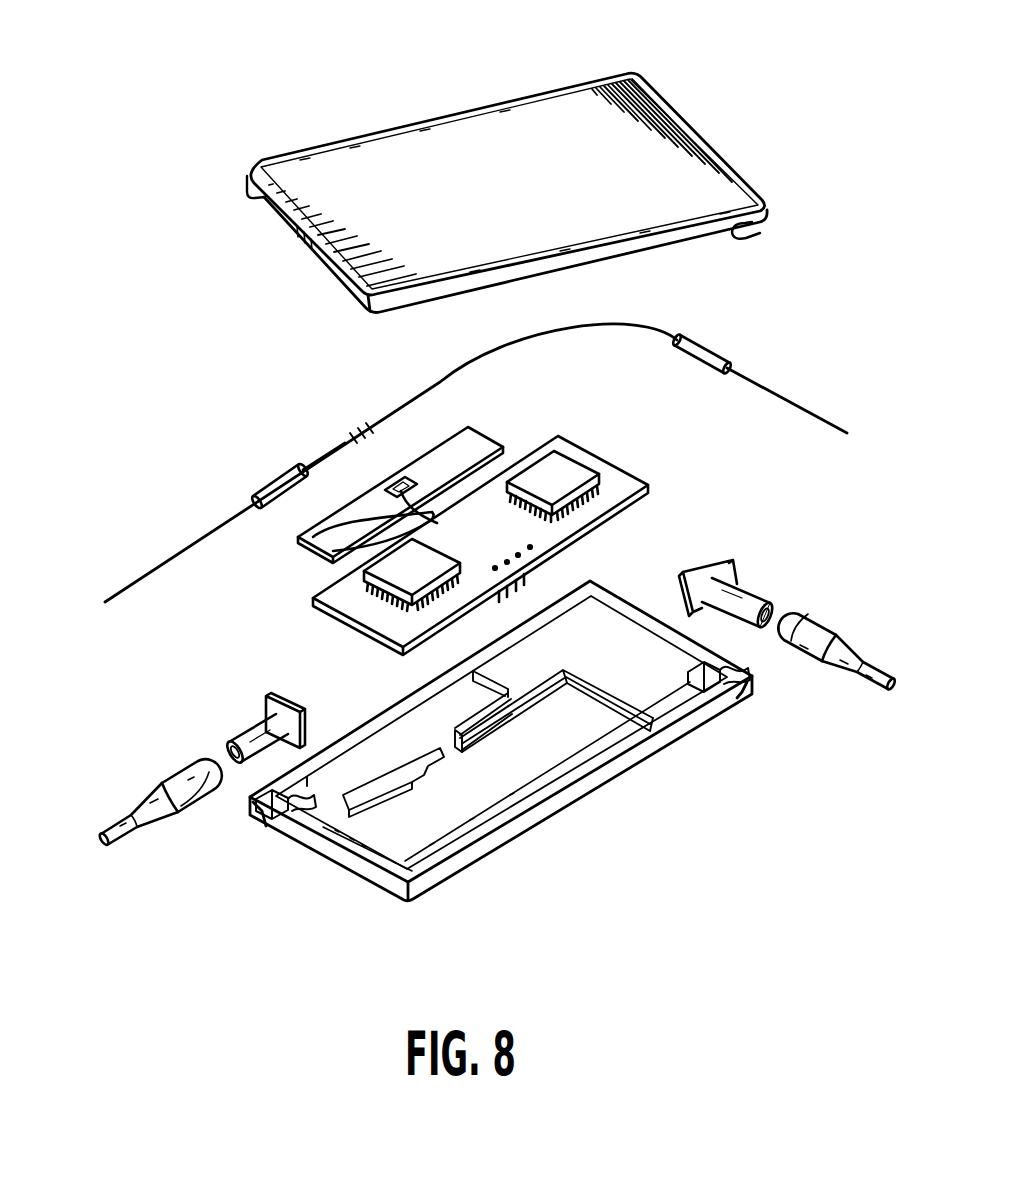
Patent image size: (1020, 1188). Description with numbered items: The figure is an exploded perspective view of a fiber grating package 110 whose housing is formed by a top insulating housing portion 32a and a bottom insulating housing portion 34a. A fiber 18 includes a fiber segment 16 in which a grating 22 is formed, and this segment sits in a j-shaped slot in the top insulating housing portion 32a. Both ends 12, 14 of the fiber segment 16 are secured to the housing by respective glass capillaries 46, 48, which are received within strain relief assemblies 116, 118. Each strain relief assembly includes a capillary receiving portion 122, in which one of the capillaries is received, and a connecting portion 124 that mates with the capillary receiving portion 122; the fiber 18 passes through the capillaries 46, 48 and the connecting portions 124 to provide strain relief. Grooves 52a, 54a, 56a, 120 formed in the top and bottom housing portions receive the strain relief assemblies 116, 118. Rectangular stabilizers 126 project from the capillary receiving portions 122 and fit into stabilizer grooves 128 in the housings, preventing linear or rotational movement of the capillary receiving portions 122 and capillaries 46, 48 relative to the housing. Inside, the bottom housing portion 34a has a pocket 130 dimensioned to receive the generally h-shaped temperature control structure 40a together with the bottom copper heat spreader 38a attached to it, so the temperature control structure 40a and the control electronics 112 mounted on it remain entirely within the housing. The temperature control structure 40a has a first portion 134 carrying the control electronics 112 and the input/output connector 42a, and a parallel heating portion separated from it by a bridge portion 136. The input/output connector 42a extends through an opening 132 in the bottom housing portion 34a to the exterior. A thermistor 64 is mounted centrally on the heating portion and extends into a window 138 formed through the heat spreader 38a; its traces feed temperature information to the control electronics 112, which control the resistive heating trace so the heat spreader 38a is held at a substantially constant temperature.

The grating package 110 is at (494, 156).
The top insulating housing portion 32a is at (578, 82).
The groove 120 is at (255, 202).
The groove 56a is at (746, 234).
The end of fiber segment 12 is at (735, 321).
The glass capillary 48 is at (713, 352).
The fiber 18 is at (185, 547).
The grating 22 is at (357, 430).
The fiber segment 16 is at (330, 455).
The end of fiber segment 14 is at (224, 465).
The glass capillary 46 is at (298, 468).
The heat spreader 38a is at (383, 467).
The thermistor 64 is at (401, 482).
The window 138 is at (441, 517).
The bridge portion 136 is at (305, 542).
The temperature control structure 40a is at (475, 509).
The first portion 134 is at (612, 455).
The control electronics 112 is at (561, 455).
The input/output connector 42a is at (530, 580).
The bottom insulating housing portion 34a is at (499, 771).
The pocket 130 is at (445, 832).
The opening 132 is at (520, 797).
The groove 52a is at (270, 826).
The groove 54a is at (742, 698).
The stabilizer groove 128 is at (250, 817).
The strain relief assembly 116 is at (484, 658).
The strain relief assembly 118 is at (818, 573).
The capillary receiving portion 122 is at (250, 732).
The rectangular stabilizer 126 is at (287, 702).
The connecting portion 124 is at (132, 810).